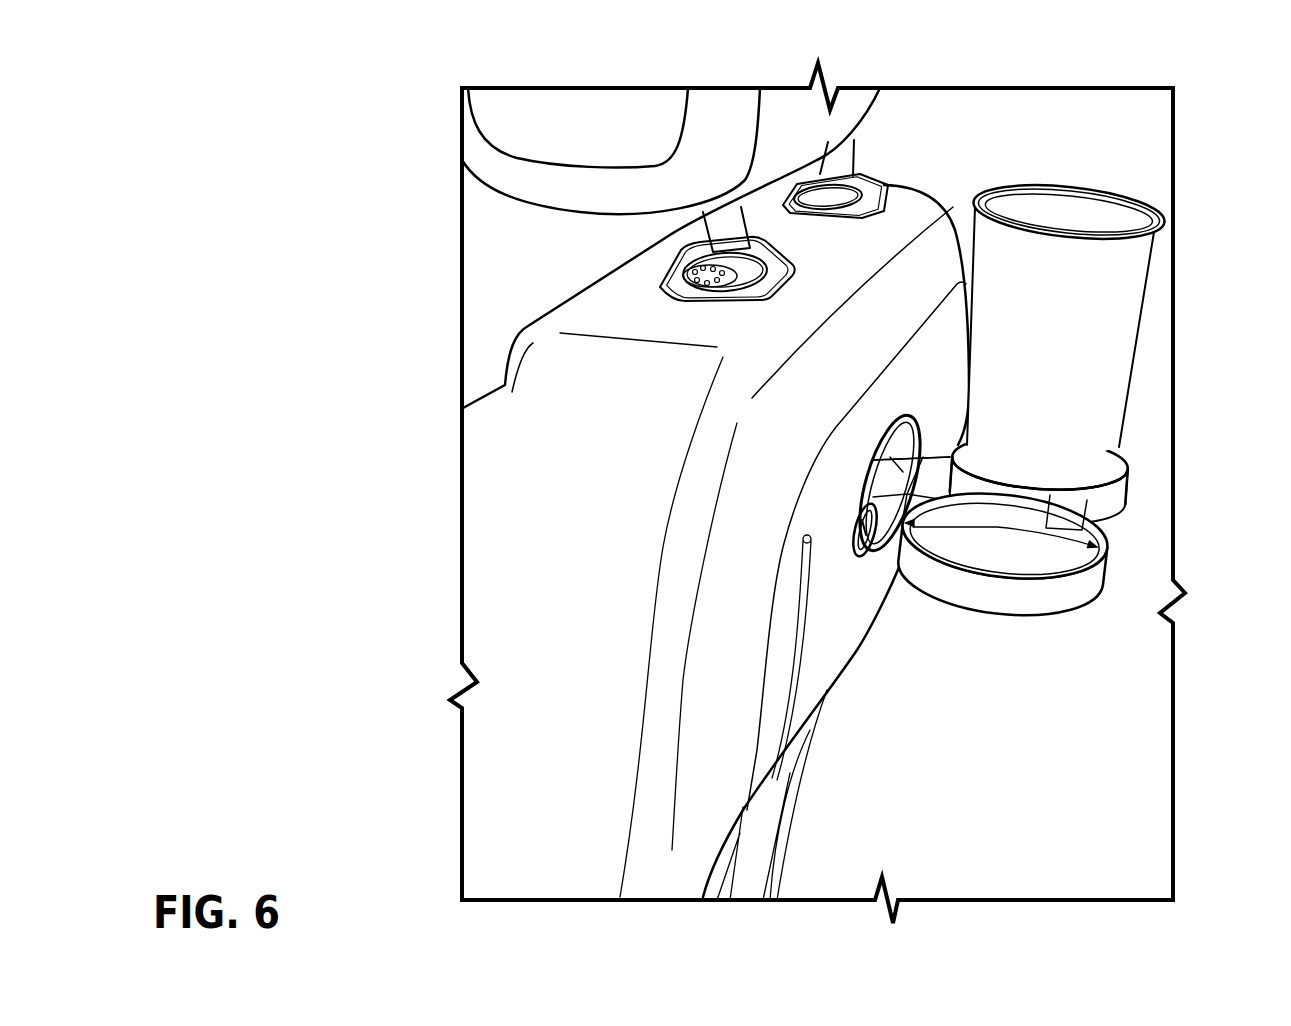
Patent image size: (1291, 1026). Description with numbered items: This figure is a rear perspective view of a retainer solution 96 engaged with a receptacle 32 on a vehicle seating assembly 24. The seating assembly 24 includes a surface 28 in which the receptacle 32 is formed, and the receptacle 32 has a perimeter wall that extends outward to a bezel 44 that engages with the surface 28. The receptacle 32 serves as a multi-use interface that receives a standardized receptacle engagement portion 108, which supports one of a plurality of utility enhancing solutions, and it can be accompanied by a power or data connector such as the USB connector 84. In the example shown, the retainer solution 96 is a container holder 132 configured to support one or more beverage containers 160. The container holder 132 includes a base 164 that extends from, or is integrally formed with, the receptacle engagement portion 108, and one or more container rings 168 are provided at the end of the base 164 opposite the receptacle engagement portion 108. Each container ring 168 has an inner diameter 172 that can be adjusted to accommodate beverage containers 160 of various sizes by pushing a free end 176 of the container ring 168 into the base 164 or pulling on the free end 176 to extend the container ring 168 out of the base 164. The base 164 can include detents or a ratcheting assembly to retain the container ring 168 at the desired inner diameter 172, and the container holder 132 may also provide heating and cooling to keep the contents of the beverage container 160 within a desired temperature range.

The vehicle seating assembly 24 is at (406, 160).
The surface 28 is at (902, 268).
The receptacle 32 is at (809, 430).
The bezel 44 is at (880, 463).
The USB connector 84 is at (846, 550).
The retainer solution 96 is at (1135, 500).
The receptacle engagement portion 108 is at (897, 473).
The container holder 132 is at (1080, 668).
The beverage container 160 is at (1095, 308).
The base 164 is at (929, 450).
The container ring 168 is at (1130, 465).
The inner diameter 172 is at (997, 537).
The free end 176 is at (1070, 529).